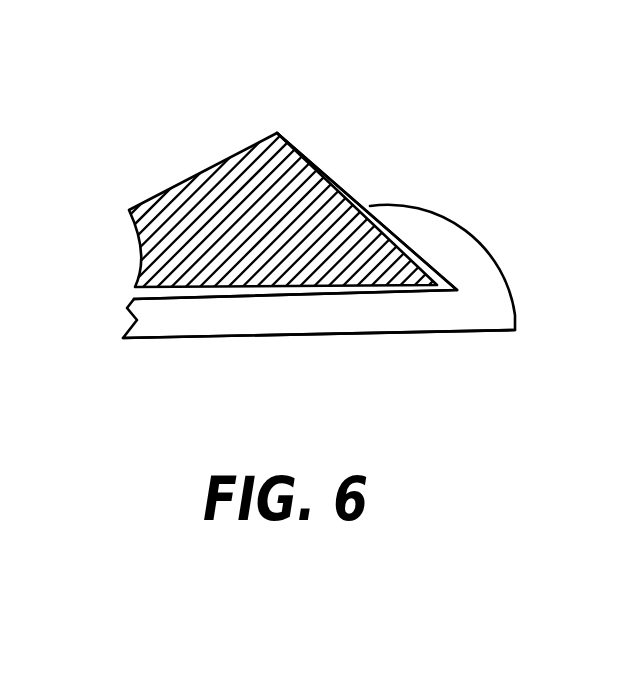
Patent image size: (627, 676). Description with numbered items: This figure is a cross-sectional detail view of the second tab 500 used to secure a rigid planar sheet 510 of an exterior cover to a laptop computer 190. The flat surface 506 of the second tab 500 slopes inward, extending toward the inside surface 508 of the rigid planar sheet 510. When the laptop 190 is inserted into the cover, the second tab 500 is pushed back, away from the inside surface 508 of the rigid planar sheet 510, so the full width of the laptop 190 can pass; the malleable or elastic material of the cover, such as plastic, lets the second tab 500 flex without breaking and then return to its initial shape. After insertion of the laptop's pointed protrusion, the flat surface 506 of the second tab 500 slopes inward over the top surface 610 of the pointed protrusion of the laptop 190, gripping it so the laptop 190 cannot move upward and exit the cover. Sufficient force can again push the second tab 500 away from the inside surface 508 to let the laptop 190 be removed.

The laptop computer 190 is at (300, 152).
The top surface of pointed protrusion 610 is at (331, 181).
The flat surface 506 is at (403, 243).
The second tab 500 is at (498, 267).
The inside surface 508 is at (263, 298).
The rigid planar sheet 510 is at (407, 333).